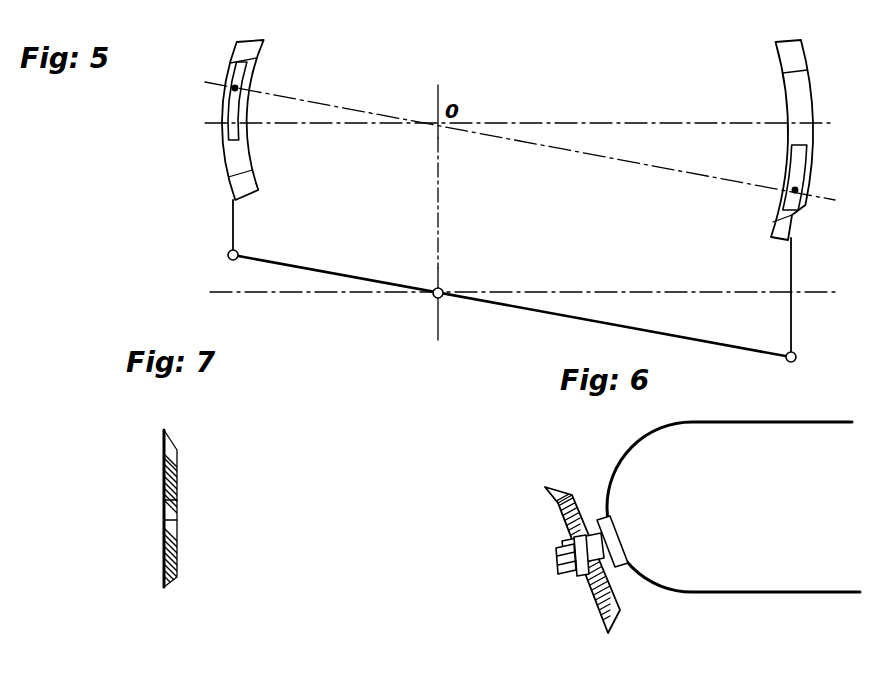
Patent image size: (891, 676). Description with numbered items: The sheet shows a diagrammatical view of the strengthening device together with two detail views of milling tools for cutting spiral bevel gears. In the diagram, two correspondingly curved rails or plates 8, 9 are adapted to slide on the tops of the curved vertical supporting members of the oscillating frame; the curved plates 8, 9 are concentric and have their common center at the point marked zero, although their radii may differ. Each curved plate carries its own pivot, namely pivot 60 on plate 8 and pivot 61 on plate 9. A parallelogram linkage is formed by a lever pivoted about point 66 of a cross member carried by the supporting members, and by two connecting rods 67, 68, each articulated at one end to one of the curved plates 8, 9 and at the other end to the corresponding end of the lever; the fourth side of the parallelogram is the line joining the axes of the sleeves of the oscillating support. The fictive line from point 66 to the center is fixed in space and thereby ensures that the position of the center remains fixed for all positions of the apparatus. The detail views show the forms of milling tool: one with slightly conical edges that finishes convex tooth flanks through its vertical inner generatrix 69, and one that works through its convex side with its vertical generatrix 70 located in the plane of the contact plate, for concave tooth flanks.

In FIG. 5, the curved plate 8 is at (775, 229).
In FIG. 5, the curved plate 9 is at (250, 55).
In FIG. 5, the pivot 60 is at (805, 188).
In FIG. 5, the pivot 61 is at (233, 89).
In FIG. 5, the pivot point 66 is at (434, 299).
In FIG. 5, the connecting rod 67 is at (237, 229).
In FIG. 5, the connecting rod 68 is at (793, 273).
In FIG. 6, the vertical inner generatrix 69 is at (608, 617).
In FIG. 7, the vertical generatrix 70 is at (178, 577).